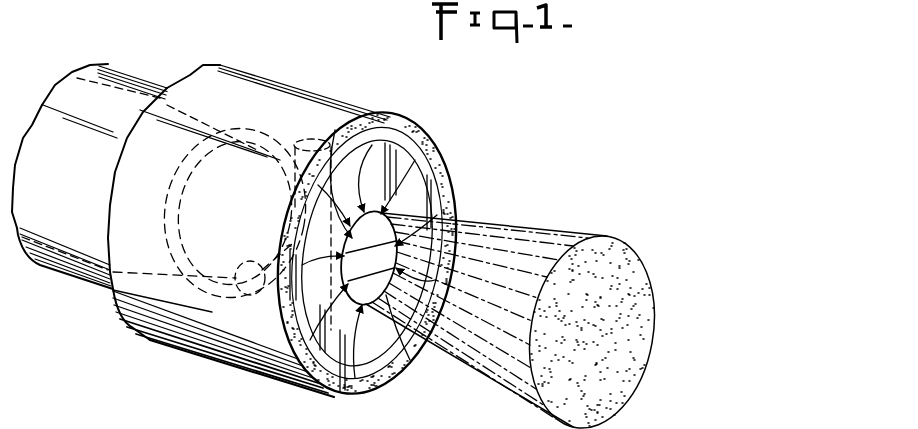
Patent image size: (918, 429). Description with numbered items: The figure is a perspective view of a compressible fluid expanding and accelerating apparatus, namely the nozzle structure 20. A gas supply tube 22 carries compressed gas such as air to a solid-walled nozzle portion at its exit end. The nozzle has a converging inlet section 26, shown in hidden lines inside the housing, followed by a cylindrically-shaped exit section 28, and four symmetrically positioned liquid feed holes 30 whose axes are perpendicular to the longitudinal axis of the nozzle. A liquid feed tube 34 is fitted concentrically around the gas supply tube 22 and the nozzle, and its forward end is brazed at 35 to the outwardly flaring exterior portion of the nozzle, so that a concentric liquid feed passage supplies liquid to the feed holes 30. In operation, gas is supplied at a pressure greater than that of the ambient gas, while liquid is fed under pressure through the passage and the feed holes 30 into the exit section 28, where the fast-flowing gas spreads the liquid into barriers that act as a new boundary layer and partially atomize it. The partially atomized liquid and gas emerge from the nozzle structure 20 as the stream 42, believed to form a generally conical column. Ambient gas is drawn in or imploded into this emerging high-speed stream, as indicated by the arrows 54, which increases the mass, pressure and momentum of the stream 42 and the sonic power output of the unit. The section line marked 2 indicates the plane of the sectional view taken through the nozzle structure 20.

The nozzle structure 20 is at (299, 77).
The gas supply tube 22 is at (117, 67).
The converging inlet section 26 is at (233, 201).
The cylindrically-shaped exit section 28 is at (290, 233).
The liquid feed holes 30 is at (313, 135).
The liquid feed tube 34 is at (240, 65).
The brazed joint 35 is at (382, 372).
The emerging gas stream 42 is at (612, 238).
The arrows indicating inward flow of ambient gas 54 is at (400, 248).
The section line 2- 2 is at (340, 89).